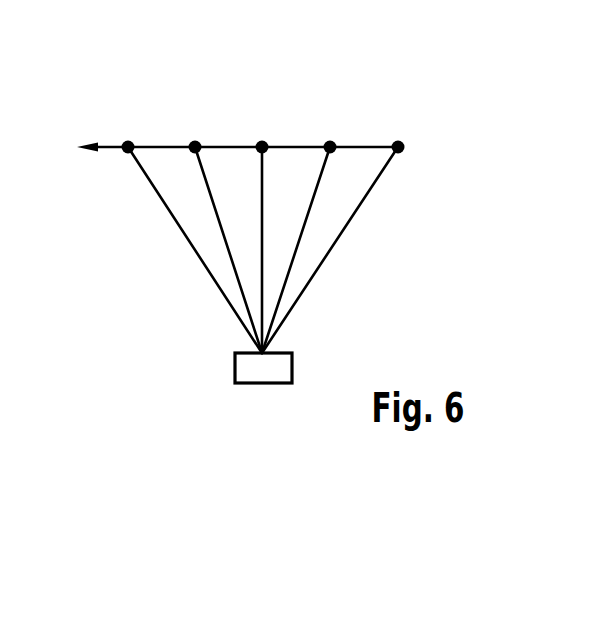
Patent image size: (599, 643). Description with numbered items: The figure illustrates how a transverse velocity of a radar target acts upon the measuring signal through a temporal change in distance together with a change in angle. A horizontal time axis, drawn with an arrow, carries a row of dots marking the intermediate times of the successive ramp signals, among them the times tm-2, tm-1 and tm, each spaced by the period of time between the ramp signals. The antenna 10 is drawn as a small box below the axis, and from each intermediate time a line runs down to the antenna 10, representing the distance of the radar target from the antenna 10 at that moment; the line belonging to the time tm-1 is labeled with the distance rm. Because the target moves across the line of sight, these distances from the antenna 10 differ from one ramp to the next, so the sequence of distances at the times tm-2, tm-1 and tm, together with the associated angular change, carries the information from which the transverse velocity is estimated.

The antenna 10 is at (233, 367).
The intermediate time tm-2 is at (128, 147).
The intermediate time tm-1 is at (195, 147).
The intermediate time tm is at (262, 147).
The distance rm is at (228, 250).